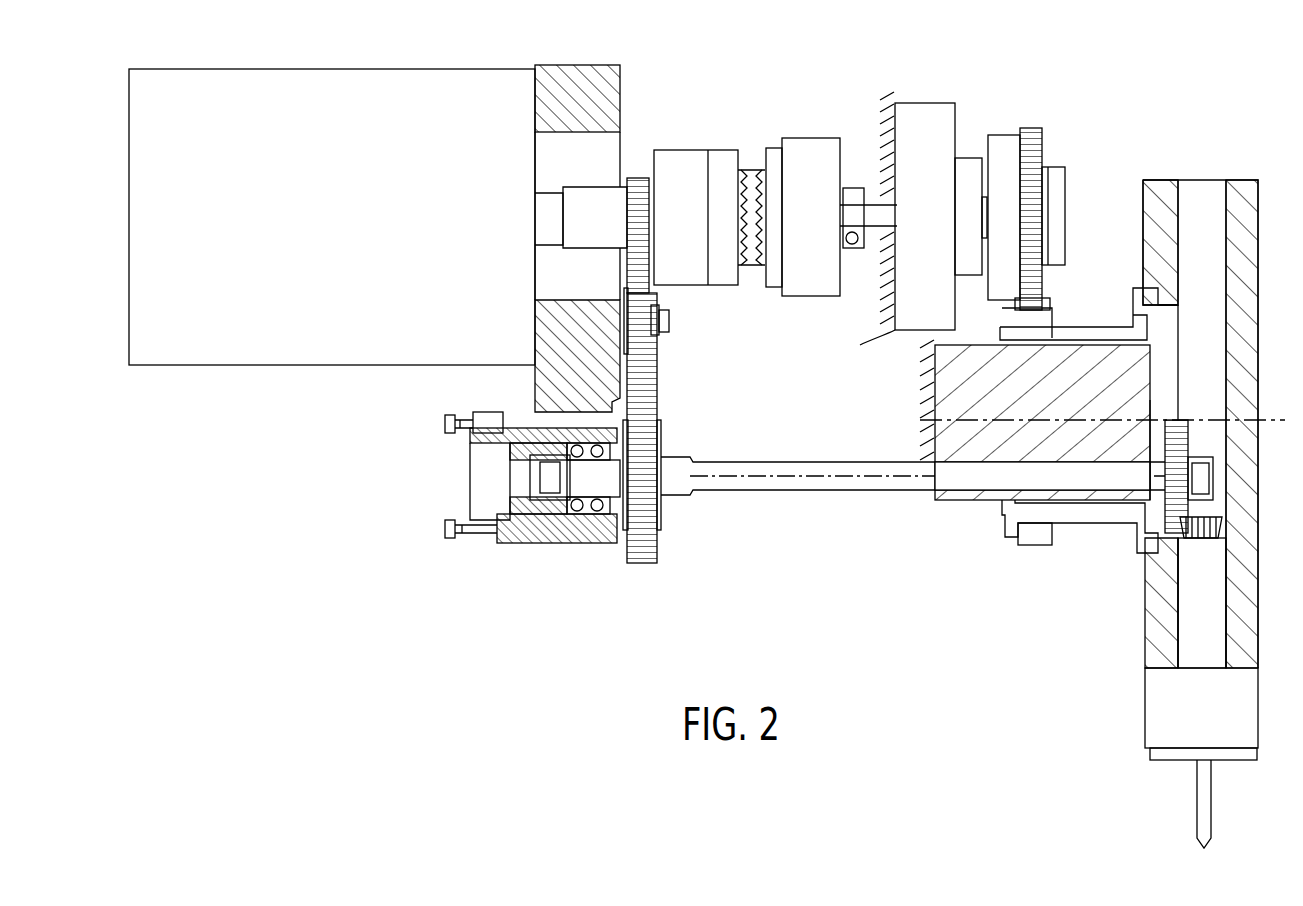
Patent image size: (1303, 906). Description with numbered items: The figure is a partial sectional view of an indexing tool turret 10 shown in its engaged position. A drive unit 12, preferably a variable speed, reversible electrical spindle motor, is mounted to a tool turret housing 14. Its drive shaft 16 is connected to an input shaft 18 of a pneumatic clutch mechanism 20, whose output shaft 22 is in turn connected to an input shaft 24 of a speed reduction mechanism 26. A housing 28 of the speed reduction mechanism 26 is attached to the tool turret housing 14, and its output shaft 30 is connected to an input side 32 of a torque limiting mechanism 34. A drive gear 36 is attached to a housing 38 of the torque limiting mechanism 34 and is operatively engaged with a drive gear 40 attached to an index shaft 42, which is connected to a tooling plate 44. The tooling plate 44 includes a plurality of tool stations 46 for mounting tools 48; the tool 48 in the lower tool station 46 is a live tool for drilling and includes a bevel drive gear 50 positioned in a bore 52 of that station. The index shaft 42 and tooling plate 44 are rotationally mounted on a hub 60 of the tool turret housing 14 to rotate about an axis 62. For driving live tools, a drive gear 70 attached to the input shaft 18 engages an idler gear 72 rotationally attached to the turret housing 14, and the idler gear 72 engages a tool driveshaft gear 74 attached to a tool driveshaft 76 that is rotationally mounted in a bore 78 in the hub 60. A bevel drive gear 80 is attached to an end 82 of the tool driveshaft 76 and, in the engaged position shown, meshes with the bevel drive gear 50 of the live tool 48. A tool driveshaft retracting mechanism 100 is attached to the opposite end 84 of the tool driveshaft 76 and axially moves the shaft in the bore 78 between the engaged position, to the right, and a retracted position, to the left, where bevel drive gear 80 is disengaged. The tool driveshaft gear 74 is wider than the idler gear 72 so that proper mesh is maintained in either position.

The indexing tool turret 10 is at (845, 65).
The drive unit 12 is at (315, 100).
The tool turret housing 14 is at (572, 88).
The drive shaft 16 is at (552, 210).
The input shaft 18 is at (600, 195).
The clutch mechanism 20 is at (688, 168).
The output shaft 22 is at (848, 200).
The input shaft 24 is at (895, 225).
The speed reduction mechanism 26 is at (920, 115).
The housing 28 is at (895, 335).
The output shaft 30 is at (975, 210).
The input side 32 is at (987, 228).
The torque limiting mechanism 34 is at (1010, 160).
The drive gear 36 is at (1035, 150).
The housing 38 is at (1010, 195).
The drive gear 40 is at (1030, 538).
The index shaft 42 is at (1085, 330).
The tooling plate 44 is at (1245, 190).
The tool stations 46 is at (1165, 190).
The tool 48 is at (1195, 710).
The bevel drive gear 50 is at (1220, 525).
The bore 52 is at (1220, 600).
The hub 60 is at (945, 395).
The axis 62 is at (1252, 420).
The drive gear 70 is at (636, 238).
The idler gear 72 is at (640, 360).
The tool driveshaft gear 74 is at (645, 565).
The tool driveshaft 76 is at (820, 480).
The bore 78 is at (945, 462).
The bevel drive gear 80 is at (1170, 435).
The end 82 is at (1115, 462).
The end 84 is at (597, 480).
The tool driveshaft retracting mechanism 100 is at (538, 548).